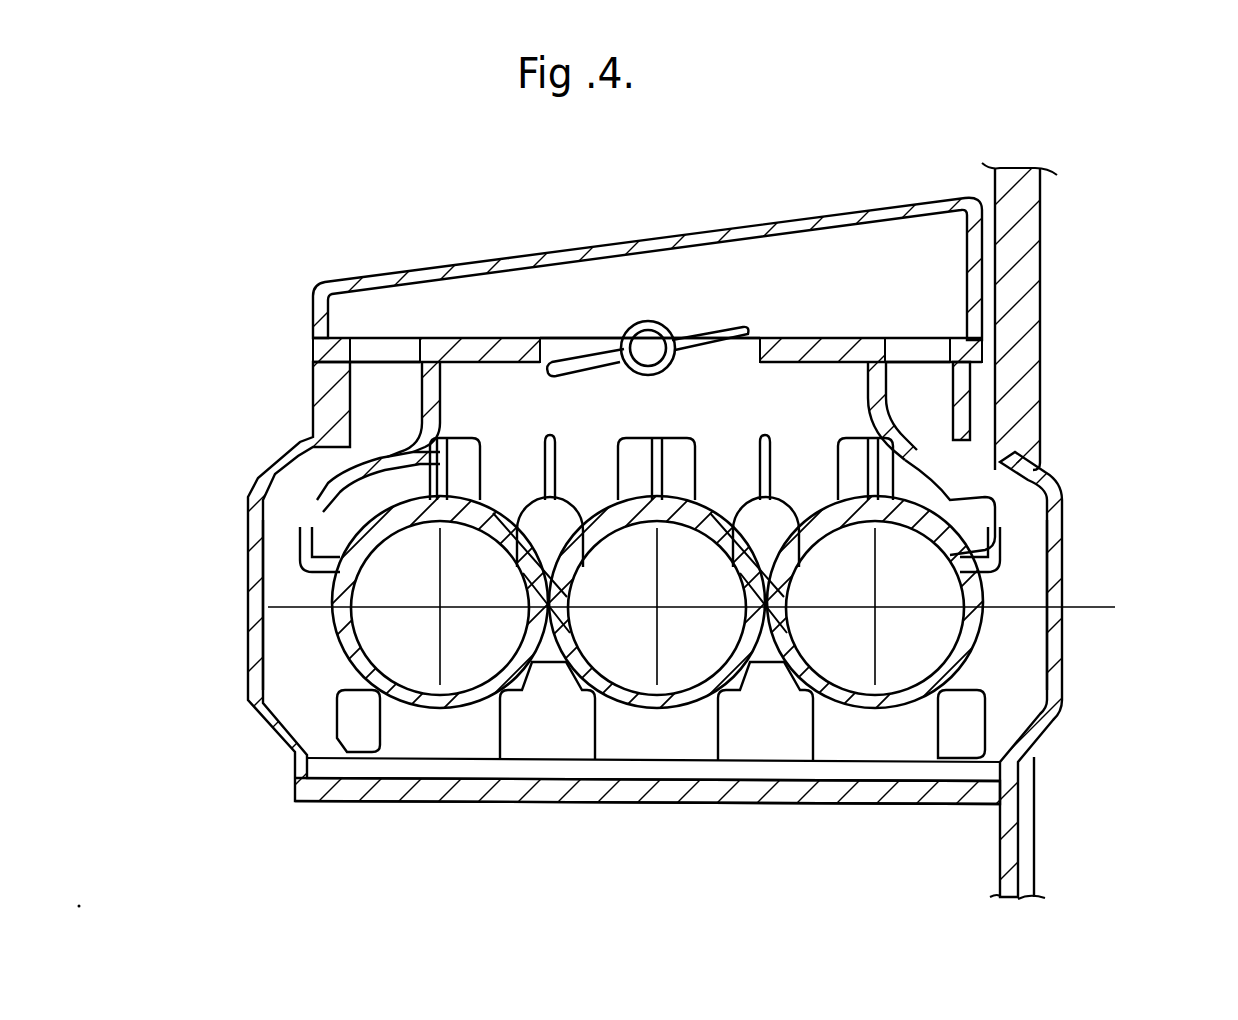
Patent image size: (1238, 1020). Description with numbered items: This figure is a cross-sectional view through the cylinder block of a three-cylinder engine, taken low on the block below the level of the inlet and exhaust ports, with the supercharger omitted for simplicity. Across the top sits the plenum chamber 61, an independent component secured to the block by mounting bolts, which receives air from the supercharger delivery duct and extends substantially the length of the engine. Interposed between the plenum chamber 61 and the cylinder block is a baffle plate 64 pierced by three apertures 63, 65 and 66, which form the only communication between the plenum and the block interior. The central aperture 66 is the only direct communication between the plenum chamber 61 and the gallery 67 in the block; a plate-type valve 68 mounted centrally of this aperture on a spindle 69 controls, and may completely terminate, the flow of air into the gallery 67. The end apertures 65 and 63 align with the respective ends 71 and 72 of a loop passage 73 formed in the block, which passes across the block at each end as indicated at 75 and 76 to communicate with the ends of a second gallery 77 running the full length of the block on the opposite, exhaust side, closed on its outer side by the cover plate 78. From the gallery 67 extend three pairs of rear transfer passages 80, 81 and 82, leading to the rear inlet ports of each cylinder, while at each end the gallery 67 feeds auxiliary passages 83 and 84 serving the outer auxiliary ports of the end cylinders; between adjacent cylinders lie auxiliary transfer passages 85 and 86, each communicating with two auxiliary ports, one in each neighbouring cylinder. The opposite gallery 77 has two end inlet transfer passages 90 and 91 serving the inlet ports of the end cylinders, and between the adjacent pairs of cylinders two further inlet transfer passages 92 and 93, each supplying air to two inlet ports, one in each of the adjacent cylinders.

The plenum chamber 61 is at (786, 272).
The end aperture 63 is at (385, 348).
The baffle plate 64 is at (489, 345).
The end aperture 65 is at (900, 348).
The central aperture 66 is at (587, 352).
The gallery 67 is at (668, 426).
The plate-type valve 68 is at (712, 335).
The spindle 69 is at (648, 348).
The end of loop passage 71 is at (918, 406).
The end of loop passage 72 is at (380, 392).
The loop passage 73 is at (297, 580).
The cross-block portion of loop passage 75 is at (1012, 590).
The cross-block portion of loop passage 76 is at (307, 655).
The gallery 77 is at (668, 756).
The cover plate 78 is at (657, 798).
The rear transfer passage 80 is at (550, 527).
The rear transfer passage 81 is at (683, 460).
The rear transfer passage 82 is at (848, 472).
The auxiliary passage 83 is at (967, 536).
The auxiliary passage 84 is at (345, 530).
The auxiliary transfer passage 85 is at (762, 522).
The auxiliary transfer passage 86 is at (417, 475).
The end inlet transfer passage 90 is at (353, 718).
The end inlet transfer passage 91 is at (960, 718).
The inlet transfer passage 92 is at (767, 727).
The inlet transfer passage 93 is at (545, 722).